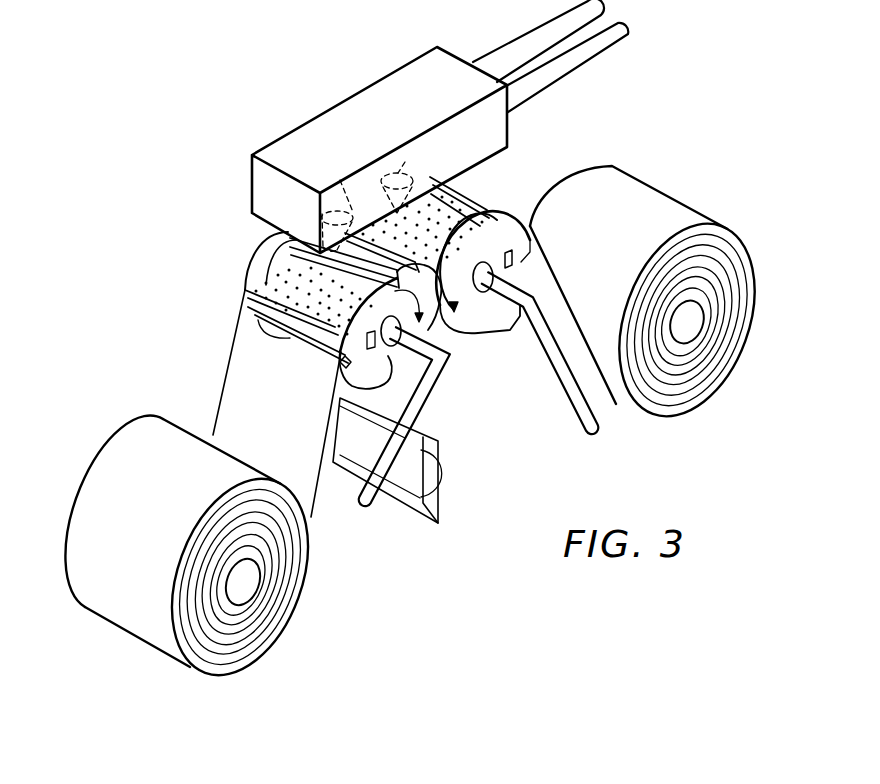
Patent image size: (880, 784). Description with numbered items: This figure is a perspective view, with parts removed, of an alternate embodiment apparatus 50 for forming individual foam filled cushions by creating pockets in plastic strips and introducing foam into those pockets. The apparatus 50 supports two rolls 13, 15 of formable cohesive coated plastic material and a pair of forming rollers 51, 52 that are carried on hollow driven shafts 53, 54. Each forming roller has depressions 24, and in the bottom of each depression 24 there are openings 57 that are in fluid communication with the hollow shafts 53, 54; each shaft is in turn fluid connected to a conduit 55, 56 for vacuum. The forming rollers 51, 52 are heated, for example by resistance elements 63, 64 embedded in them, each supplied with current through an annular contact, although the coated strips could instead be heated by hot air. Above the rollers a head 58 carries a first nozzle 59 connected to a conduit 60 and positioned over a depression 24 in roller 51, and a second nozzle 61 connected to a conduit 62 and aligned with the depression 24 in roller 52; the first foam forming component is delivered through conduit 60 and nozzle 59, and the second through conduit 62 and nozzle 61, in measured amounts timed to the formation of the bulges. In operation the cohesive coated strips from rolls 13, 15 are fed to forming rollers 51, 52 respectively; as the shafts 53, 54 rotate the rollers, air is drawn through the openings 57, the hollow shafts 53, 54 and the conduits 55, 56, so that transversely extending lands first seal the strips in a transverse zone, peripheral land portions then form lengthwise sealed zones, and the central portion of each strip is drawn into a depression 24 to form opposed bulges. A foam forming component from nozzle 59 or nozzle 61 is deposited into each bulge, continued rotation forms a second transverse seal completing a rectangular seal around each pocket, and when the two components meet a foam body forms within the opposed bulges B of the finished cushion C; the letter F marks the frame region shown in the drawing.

The roll 13 is at (161, 438).
The roll 15 is at (683, 216).
The depression 24 is at (258, 252).
The apparatus 50 is at (248, 224).
The forming roller 51 is at (392, 320).
The forming roller 52 is at (503, 248).
The hollow driven shaft 53 is at (371, 352).
The hollow driven shaft 54 is at (485, 273).
The conduit 55 is at (441, 368).
The conduit 56 is at (556, 344).
The openings 57 is at (300, 290).
The head 58 is at (377, 93).
The first nozzle 59 is at (344, 190).
The conduit 60 is at (522, 60).
The second nozzle 61 is at (407, 160).
The conduit 62 is at (558, 78).
The resistance element 63 is at (341, 364).
The resistance element 64 is at (512, 258).
The opposed bulges B is at (447, 477).
The cushion C is at (434, 531).
The frame F is at (424, 437).